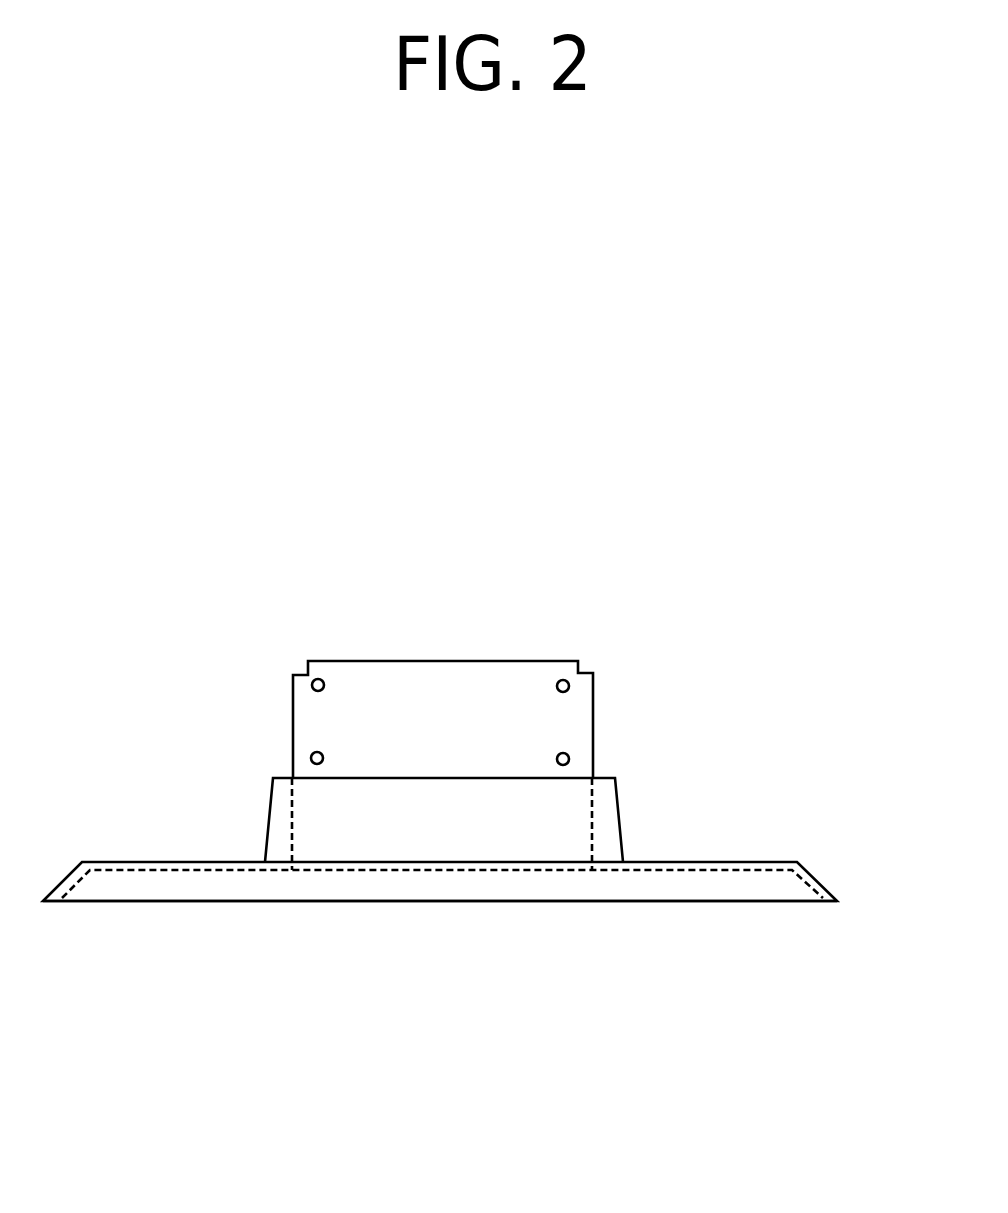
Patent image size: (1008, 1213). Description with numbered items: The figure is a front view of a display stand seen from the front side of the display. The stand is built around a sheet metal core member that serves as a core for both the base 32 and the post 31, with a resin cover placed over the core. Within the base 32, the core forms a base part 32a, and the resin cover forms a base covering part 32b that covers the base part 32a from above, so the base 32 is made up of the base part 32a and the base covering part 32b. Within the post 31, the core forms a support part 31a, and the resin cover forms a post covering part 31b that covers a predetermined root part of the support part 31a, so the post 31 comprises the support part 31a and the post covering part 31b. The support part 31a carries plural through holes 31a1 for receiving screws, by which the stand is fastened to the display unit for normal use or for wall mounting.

The post 31 is at (461, 710).
The support part 31a is at (292, 713).
The through holes 31a1 is at (324, 757).
The post covering part 31b is at (267, 823).
The base 32 is at (478, 957).
The base part 32a is at (678, 870).
The base covering part 32b is at (533, 901).